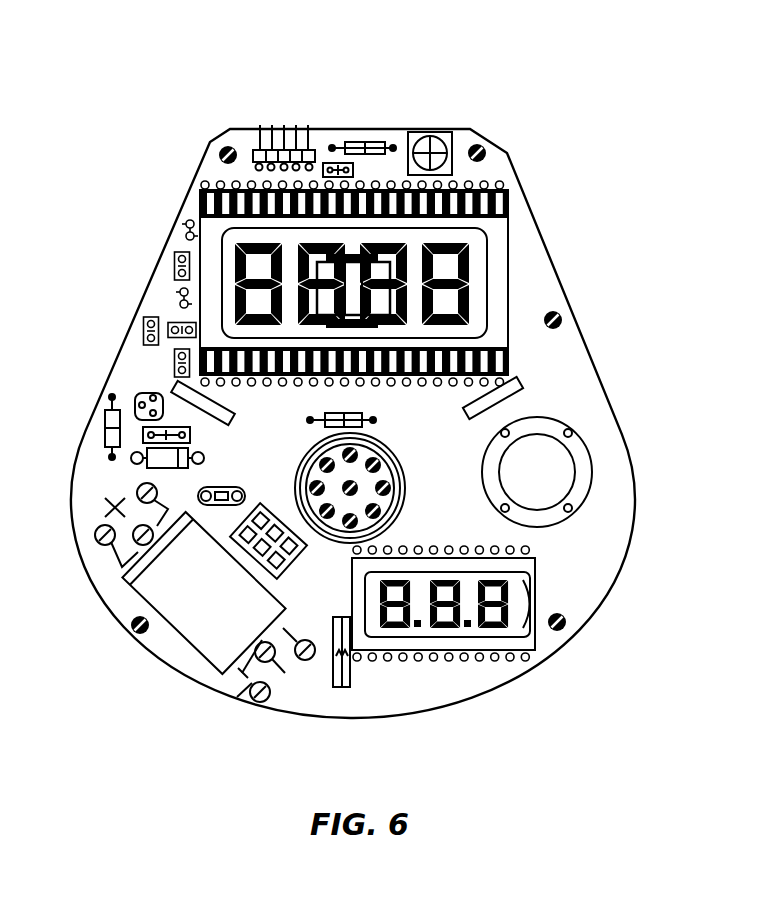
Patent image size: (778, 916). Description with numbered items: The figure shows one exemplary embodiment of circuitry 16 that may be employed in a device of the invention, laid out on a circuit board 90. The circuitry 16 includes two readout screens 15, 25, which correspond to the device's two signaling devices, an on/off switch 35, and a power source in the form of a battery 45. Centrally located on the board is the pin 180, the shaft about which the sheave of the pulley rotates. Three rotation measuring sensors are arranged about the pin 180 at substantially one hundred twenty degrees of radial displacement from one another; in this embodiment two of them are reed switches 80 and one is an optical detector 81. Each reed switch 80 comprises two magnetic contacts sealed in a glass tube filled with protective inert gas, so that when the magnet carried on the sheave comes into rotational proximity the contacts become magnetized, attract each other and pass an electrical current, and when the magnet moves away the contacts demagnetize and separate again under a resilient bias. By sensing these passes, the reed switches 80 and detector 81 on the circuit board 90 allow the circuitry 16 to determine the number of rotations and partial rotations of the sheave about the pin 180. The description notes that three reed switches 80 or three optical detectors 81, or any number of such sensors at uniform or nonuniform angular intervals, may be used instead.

The circuitry 16 is at (398, 104).
The circuit board 90 is at (523, 235).
The readout screen 15 is at (475, 272).
The reed switch 80 is at (162, 386).
The optical detector 81 is at (530, 390).
The on/off switch 35 is at (547, 473).
The pin 180 is at (400, 515).
The readout screen 25 is at (518, 592).
The battery 45 is at (168, 585).